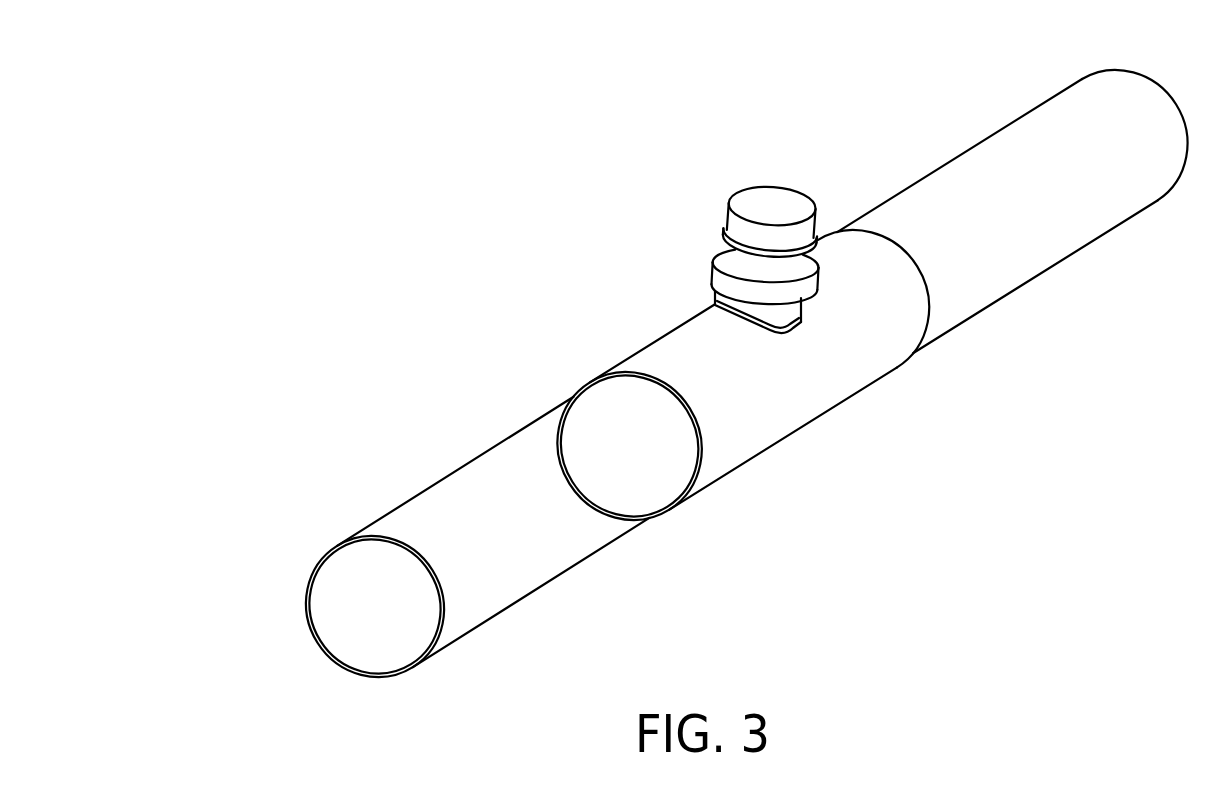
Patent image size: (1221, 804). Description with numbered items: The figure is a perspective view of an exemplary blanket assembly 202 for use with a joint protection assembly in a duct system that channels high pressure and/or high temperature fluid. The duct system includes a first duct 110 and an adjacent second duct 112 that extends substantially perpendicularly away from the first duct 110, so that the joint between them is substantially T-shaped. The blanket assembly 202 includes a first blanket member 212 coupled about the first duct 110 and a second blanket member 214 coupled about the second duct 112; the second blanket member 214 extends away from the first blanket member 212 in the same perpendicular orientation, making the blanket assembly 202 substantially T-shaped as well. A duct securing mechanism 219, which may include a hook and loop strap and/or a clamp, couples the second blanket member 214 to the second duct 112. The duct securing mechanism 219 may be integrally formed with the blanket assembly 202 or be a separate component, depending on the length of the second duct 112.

The first duct 110 is at (1030, 133).
The second duct 112 is at (775, 187).
The blanket assembly 202 is at (777, 327).
The first blanket member 212 is at (732, 462).
The second blanket member 214 is at (713, 296).
The duct securing mechanism 219 is at (713, 253).